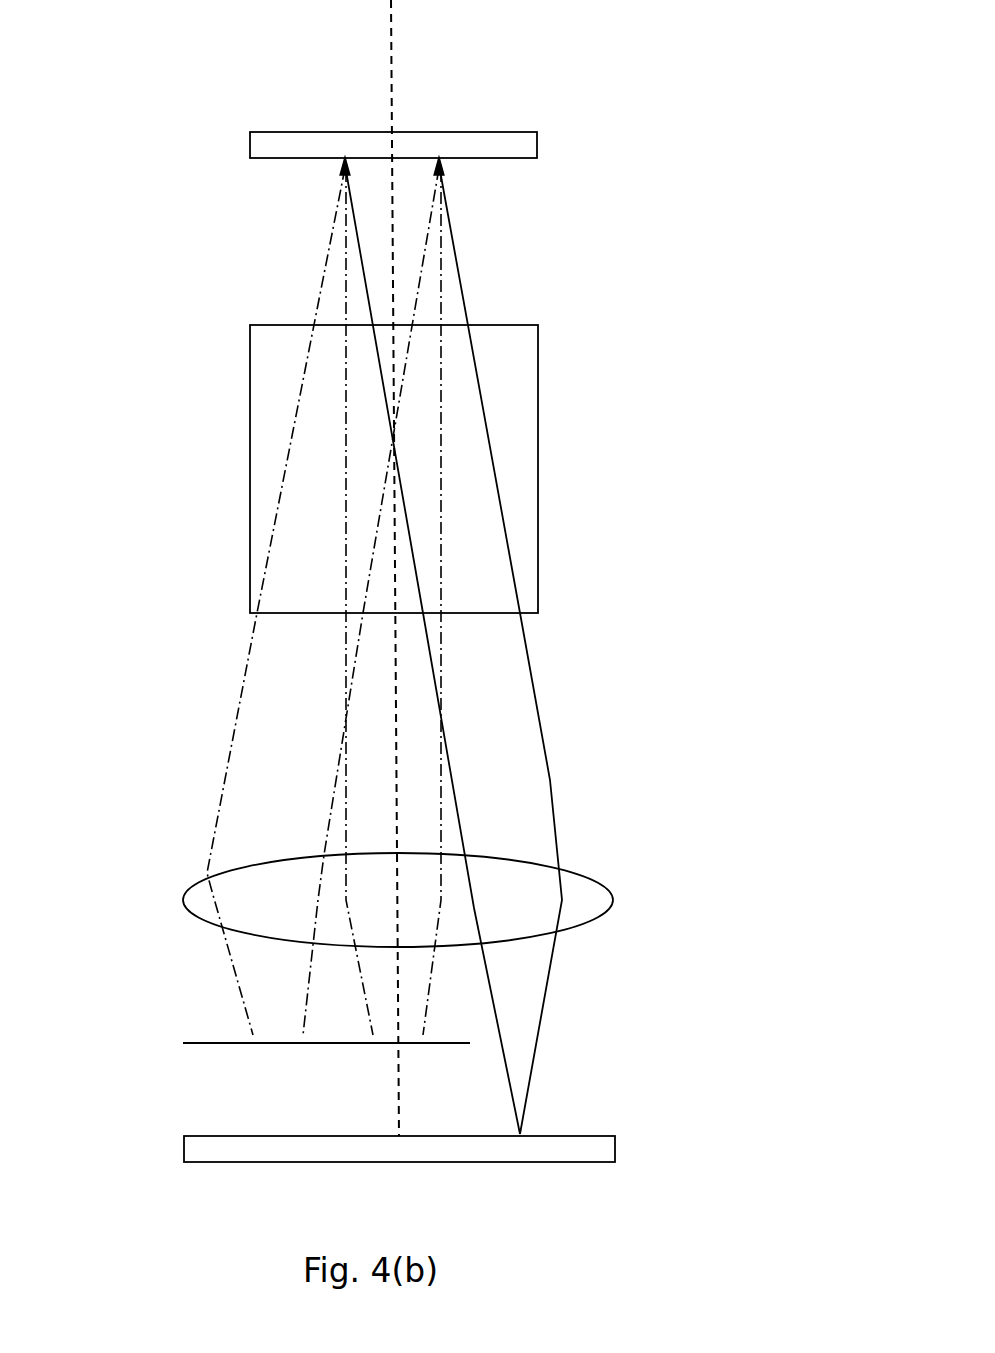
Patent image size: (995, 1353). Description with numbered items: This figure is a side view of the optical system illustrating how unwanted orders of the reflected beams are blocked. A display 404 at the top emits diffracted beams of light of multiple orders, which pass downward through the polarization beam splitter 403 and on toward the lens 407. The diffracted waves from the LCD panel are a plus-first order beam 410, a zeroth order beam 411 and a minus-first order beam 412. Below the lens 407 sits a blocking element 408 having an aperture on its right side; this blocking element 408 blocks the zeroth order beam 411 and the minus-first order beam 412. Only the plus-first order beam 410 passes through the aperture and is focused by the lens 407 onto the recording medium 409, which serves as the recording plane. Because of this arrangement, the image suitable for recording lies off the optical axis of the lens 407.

The polarization beam splitter 403 is at (245, 437).
The display 404 is at (537, 146).
The lens 407 is at (613, 900).
The blocking element 408 is at (200, 1044).
The recording medium 409 is at (615, 1144).
The +1st order beam 410 is at (507, 762).
The 0th order beam 411 is at (397, 994).
The -1st order beam 412 is at (277, 993).